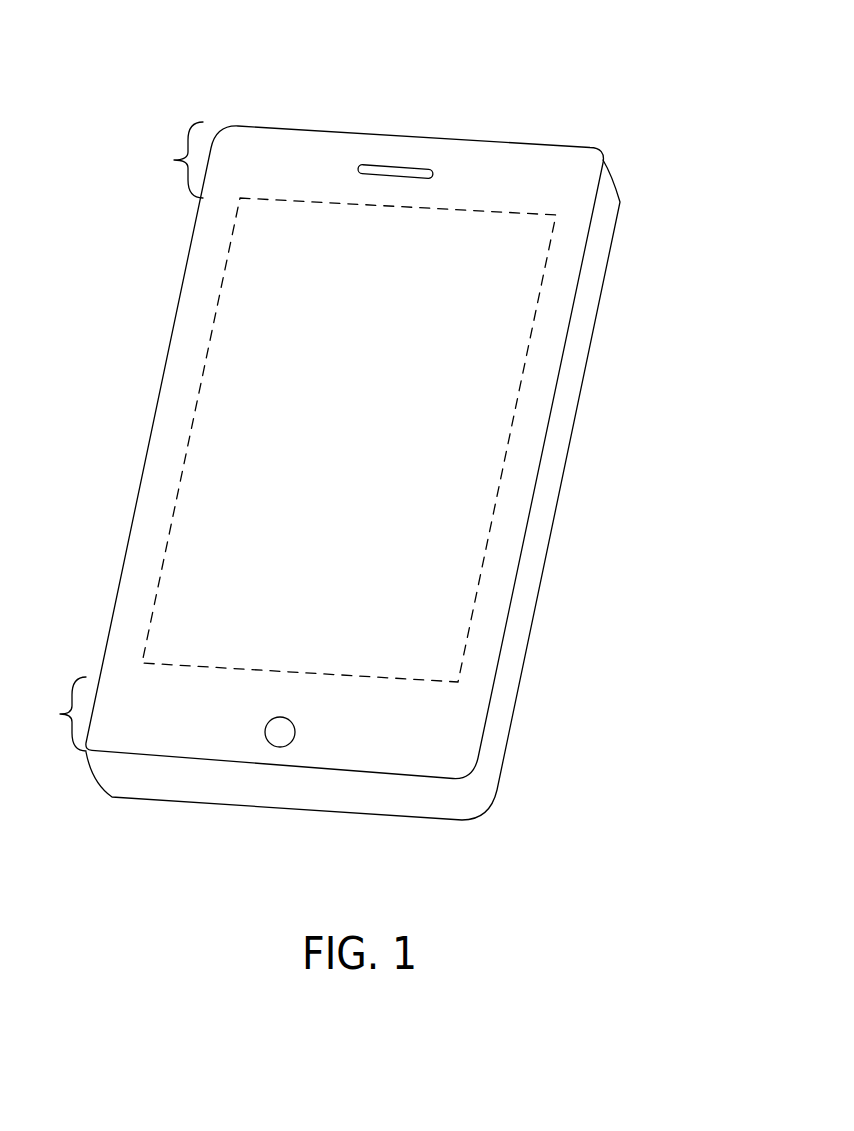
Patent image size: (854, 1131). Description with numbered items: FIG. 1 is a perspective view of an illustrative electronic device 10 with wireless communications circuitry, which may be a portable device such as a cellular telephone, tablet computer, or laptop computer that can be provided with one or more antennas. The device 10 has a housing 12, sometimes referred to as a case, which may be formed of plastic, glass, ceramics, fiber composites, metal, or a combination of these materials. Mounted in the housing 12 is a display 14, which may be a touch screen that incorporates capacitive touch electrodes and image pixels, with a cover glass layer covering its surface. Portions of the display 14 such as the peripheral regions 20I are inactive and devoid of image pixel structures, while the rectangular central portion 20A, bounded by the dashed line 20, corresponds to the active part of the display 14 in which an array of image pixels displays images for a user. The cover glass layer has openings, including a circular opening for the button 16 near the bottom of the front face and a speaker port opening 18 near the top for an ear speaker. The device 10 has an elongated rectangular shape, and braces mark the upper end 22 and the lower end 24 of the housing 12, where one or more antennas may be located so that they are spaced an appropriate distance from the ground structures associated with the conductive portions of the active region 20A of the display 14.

The electronic device 10 is at (681, 65).
The housing 12 is at (600, 297).
The display 14 is at (493, 433).
The button 16 is at (280, 748).
The speaker port opening 18 is at (390, 166).
The dashed line 20 is at (182, 467).
The active display region 20A is at (197, 553).
The peripheral regions 20I is at (486, 171).
The upper end 22 is at (171, 160).
The lower end 24 is at (54, 714).